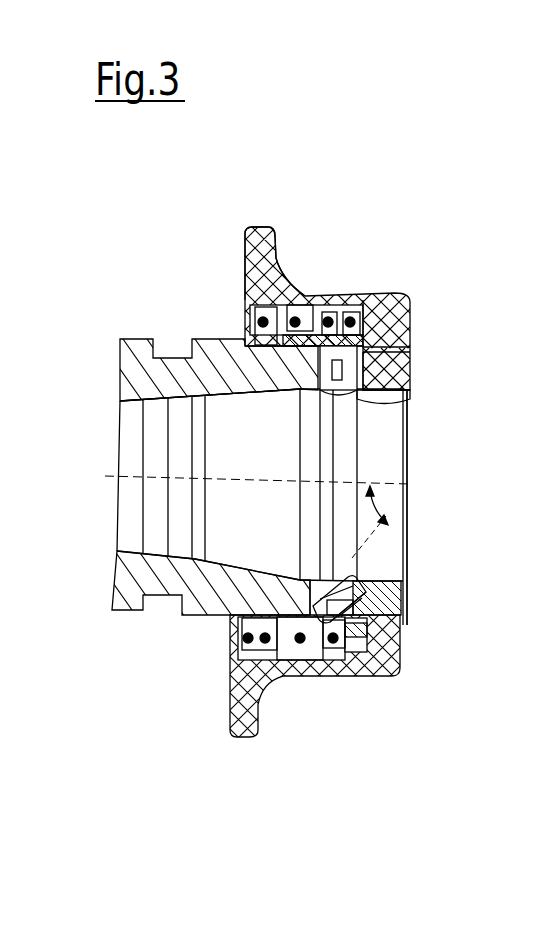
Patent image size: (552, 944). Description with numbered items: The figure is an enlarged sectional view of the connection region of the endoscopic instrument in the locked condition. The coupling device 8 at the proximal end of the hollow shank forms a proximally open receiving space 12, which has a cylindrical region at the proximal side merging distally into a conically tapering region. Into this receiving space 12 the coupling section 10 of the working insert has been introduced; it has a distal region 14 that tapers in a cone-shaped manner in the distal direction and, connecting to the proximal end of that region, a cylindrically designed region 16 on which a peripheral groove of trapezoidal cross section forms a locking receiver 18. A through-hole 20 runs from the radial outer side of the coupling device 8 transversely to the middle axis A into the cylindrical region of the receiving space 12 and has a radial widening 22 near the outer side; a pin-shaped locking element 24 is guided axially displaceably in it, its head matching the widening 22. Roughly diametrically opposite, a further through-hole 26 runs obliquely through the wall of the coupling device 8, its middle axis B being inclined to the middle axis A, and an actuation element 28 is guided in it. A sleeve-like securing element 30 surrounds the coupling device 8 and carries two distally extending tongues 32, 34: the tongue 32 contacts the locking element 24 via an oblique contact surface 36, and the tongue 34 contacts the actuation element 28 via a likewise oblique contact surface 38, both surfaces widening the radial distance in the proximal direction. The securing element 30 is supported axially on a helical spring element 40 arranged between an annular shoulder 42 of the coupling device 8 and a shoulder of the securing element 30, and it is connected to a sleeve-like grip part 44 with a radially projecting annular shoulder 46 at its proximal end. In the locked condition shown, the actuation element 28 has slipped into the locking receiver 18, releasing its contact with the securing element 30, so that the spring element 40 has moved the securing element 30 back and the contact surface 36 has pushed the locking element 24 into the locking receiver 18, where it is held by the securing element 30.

The coupling device 8 is at (175, 614).
The coupling section 10 is at (418, 434).
The receiving space 12 is at (253, 397).
The distal region 14 is at (270, 472).
The cylindrically designed region 16 is at (404, 472).
The locking receiver 18 is at (395, 400).
The through-hole 20 is at (403, 357).
The widening 22 is at (280, 362).
The locking element 24 is at (380, 297).
The through-hole 26 is at (228, 614).
The actuation element 28 is at (400, 620).
The securing element 30 is at (407, 660).
The tongue 32 is at (325, 338).
The tongue 34 is at (283, 678).
The contact surface 36 is at (345, 340).
The contact surface 38 is at (380, 668).
The spring element 40 is at (297, 678).
The annular shoulder 42 is at (229, 650).
The grip part 44 is at (403, 310).
The annular shoulder 46 is at (264, 229).
The middle axis A is at (400, 500).
The middle axis B is at (400, 590).